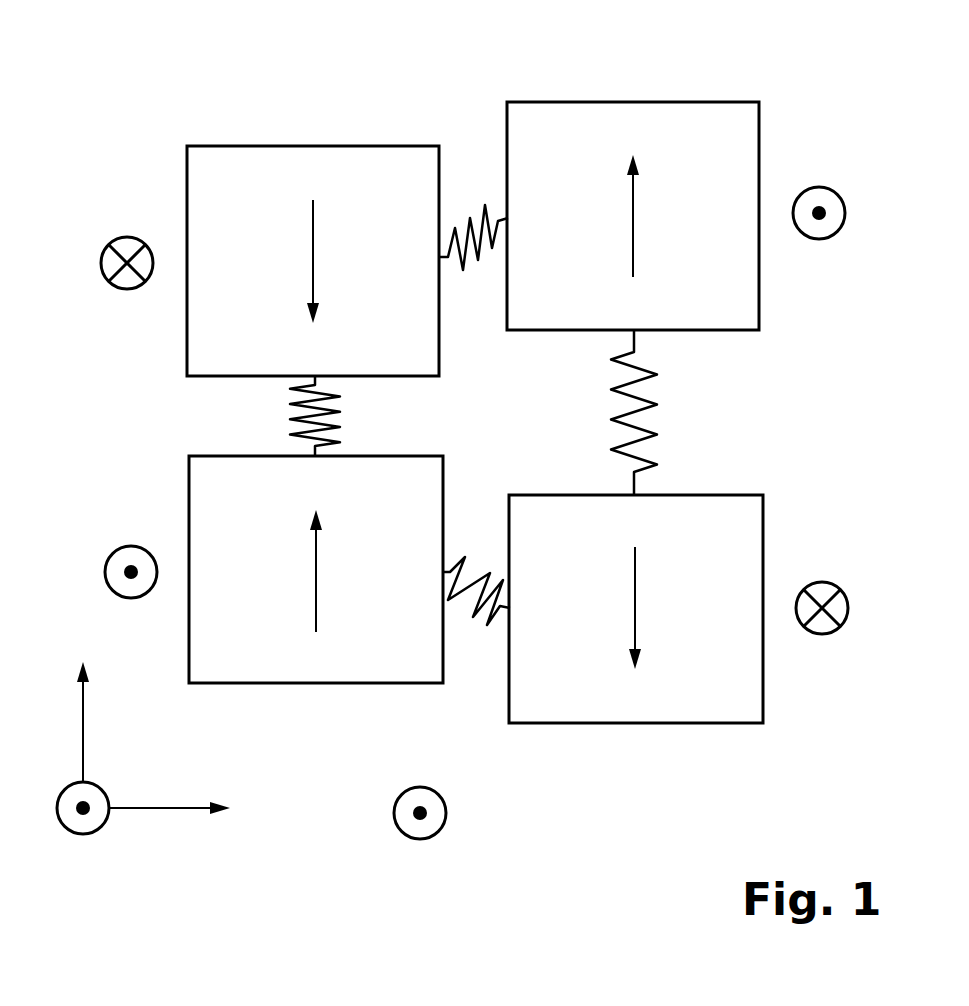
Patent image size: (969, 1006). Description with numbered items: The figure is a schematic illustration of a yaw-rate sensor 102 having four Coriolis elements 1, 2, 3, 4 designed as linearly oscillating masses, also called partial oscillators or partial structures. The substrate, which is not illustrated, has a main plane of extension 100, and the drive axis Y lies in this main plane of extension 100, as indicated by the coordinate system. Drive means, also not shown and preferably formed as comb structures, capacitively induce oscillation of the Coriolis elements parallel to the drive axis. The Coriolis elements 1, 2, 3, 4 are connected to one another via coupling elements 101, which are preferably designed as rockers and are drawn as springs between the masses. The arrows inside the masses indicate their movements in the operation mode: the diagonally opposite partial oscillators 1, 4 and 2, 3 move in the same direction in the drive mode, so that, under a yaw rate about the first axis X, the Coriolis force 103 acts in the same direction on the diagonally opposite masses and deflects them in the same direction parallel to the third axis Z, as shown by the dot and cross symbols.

The Coriolis element 1 is at (313, 146).
The Coriolis element 2 is at (316, 683).
The Coriolis element 3 is at (631, 102).
The Coriolis element 4 is at (636, 723).
The main plane of extension 100 is at (160, 763).
The coupling element 101 is at (648, 378).
The yaw-rate sensor 102 is at (165, 75).
The Coriolis force 103 is at (447, 813).